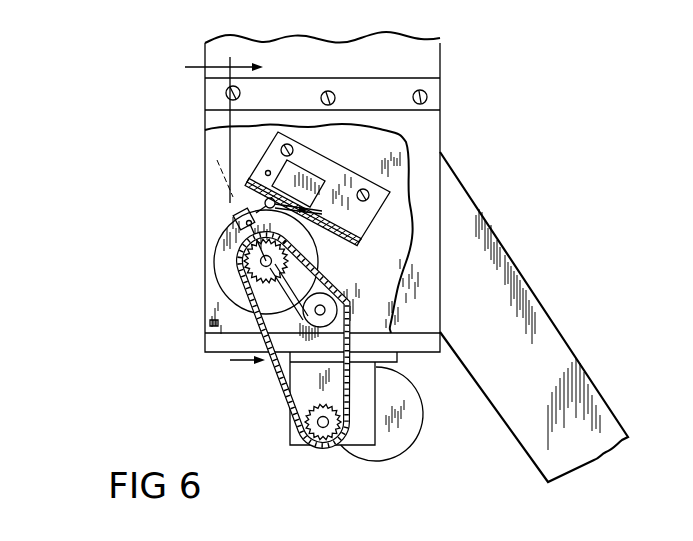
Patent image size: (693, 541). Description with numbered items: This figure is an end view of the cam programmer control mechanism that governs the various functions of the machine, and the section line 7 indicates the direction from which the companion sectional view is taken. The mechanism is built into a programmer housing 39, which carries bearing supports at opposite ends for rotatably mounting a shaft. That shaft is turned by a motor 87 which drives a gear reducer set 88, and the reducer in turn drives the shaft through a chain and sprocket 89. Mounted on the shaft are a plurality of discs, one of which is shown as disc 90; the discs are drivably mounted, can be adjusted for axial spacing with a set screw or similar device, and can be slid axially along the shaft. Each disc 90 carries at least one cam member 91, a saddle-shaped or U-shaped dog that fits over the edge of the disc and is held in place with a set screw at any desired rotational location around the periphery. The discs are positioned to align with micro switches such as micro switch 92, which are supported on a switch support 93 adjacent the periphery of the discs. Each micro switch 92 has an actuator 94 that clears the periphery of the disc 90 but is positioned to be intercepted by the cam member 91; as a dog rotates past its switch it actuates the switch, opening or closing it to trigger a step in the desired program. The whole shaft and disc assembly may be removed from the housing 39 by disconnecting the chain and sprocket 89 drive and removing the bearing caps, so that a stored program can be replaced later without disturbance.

The section line 7- 7 is at (214, 214).
The programmer housing 39 is at (432, 141).
The motor 87 is at (404, 433).
The gear reducer set 88 is at (355, 433).
The chain and sprocket 89 is at (268, 377).
The disc 90 is at (227, 248).
The cam member 91 is at (237, 212).
The micro switch 92 is at (305, 182).
The switch support 93 is at (370, 208).
The actuator 94 is at (266, 200).